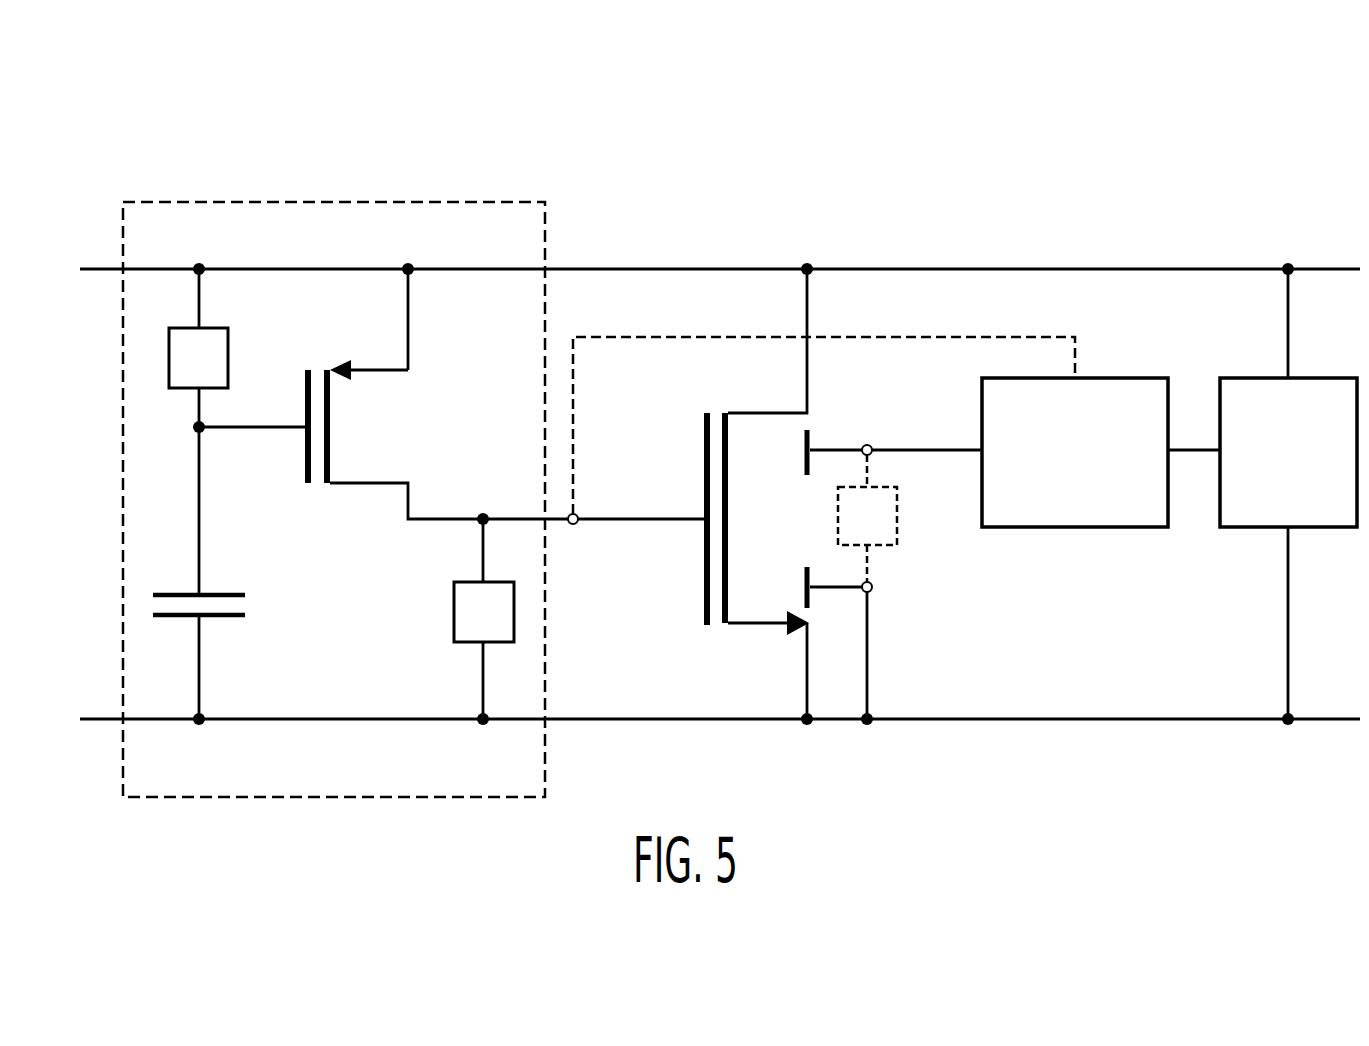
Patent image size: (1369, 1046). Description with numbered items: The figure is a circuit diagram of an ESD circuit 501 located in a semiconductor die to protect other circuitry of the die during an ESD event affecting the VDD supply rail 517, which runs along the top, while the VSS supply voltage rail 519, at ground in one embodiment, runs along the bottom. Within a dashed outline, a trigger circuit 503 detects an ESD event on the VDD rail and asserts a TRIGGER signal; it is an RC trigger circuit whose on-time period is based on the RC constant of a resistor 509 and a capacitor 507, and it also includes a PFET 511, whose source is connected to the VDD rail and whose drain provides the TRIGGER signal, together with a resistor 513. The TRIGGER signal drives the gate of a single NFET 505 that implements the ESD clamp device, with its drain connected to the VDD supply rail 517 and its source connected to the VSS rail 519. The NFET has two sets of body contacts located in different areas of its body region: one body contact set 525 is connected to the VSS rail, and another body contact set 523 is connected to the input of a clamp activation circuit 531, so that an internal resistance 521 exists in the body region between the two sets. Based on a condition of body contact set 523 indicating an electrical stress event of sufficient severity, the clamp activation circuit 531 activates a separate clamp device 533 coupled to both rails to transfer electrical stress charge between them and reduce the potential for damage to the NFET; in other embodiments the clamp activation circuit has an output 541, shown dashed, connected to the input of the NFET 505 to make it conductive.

The ESD circuit 501 is at (126, 121).
The trigger circuit 503 is at (447, 202).
The NFET 505 is at (704, 437).
The capacitor 507 is at (226, 617).
The resistor 509 is at (229, 364).
The PFET 511 is at (331, 429).
The resistor 513 is at (454, 612).
The VDD supply rail 517 is at (741, 268).
The VSS supply voltage rail 519 is at (741, 717).
The internal resistance 521 is at (898, 506).
The body contact set 523 is at (811, 440).
The body contact set 525 is at (805, 578).
The clamp activation circuit 531 is at (1088, 527).
The clamp device 533 is at (1265, 527).
The output 541 is at (1058, 337).